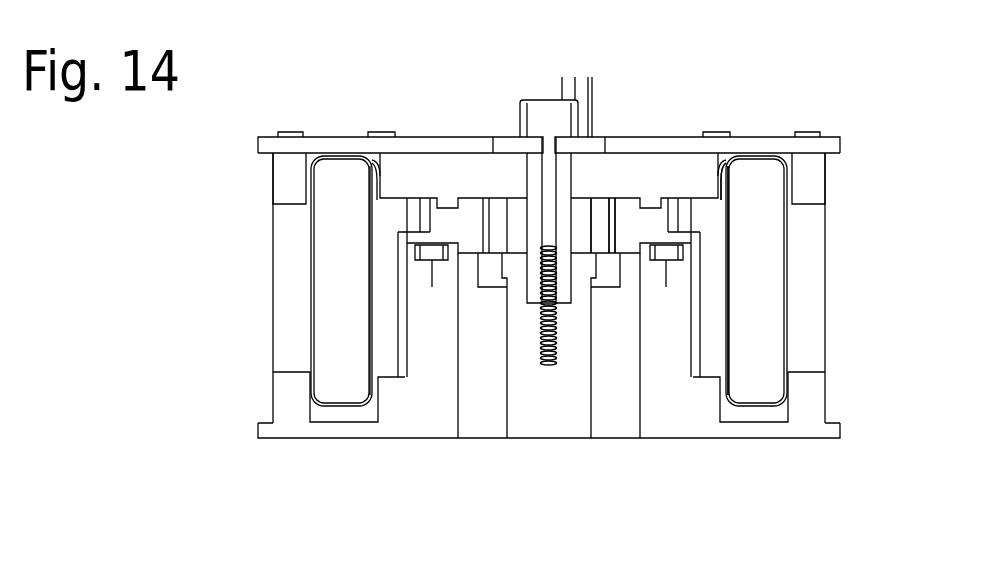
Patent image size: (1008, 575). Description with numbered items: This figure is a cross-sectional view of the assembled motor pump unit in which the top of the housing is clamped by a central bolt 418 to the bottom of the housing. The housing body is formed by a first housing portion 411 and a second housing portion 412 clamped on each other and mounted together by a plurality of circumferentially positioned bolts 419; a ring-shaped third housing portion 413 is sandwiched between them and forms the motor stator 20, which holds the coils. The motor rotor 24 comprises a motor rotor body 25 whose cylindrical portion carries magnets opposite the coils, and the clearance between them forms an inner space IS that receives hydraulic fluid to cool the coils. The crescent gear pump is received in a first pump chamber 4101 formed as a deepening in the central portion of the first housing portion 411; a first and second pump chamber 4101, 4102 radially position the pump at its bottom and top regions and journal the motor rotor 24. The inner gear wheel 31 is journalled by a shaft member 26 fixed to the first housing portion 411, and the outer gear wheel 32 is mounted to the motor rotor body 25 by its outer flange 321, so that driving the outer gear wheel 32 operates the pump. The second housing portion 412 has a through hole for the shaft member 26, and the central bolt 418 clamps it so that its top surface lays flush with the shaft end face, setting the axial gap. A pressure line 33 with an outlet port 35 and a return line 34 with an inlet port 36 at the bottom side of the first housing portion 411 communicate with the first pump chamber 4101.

The motor stator 20 is at (302, 338).
The motor rotor 24 is at (383, 260).
The motor rotor body 25 is at (712, 358).
The shaft member 26 is at (563, 165).
The inner gear wheel 31 is at (581, 215).
The outer gear wheel 32 is at (631, 220).
The outer flange 321 is at (680, 242).
The pressure line 33 is at (471, 405).
The return line 34 is at (623, 403).
The outlet port 35 is at (478, 439).
The inlet port 36 is at (622, 440).
The first housing portion 411 is at (806, 404).
The second housing portion 412 is at (807, 183).
The third housing portion 413 is at (782, 335).
The central bolt 418 is at (546, 107).
The bolts 419 is at (810, 133).
The first pump chamber 4101 is at (467, 255).
The second pump chamber 4102 is at (473, 203).
The inner space IS is at (730, 283).